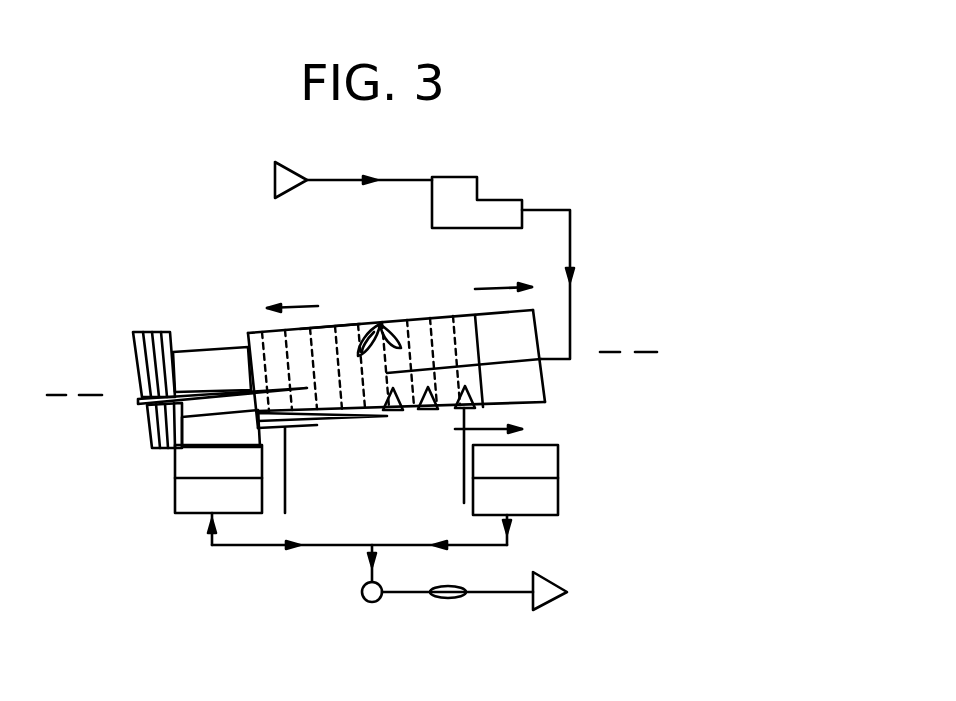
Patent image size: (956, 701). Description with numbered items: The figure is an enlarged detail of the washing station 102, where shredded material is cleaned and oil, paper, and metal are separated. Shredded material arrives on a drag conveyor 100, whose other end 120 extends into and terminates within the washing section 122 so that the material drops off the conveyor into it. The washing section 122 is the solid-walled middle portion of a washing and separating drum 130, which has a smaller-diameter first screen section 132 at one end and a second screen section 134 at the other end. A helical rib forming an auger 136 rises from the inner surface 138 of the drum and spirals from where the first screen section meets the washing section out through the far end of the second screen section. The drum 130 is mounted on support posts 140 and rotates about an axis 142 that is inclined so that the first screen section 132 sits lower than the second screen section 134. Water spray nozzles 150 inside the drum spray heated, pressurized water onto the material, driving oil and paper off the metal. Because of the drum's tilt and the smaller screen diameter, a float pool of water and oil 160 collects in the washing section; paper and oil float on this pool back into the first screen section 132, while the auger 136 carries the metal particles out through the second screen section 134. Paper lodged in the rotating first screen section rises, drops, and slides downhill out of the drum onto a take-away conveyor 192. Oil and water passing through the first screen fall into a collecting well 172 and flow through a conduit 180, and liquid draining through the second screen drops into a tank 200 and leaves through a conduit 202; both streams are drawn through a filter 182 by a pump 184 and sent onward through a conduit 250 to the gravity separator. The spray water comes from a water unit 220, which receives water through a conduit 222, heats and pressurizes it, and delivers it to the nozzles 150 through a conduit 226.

The drag conveyor 100 is at (140, 400).
The washing station 102 is at (192, 283).
The other end of drag conveyor 120 is at (327, 427).
The washing section 122 is at (381, 300).
The washing and separating drum 130 is at (252, 328).
The first screen section 132 is at (193, 350).
The second screen section 134 is at (545, 375).
The auger 136 is at (393, 322).
The inner surface 138 is at (326, 328).
The support posts 140 is at (285, 497).
The axis 142 is at (654, 354).
The water spray nozzles 150 is at (468, 410).
The float pool of water and oil 160 is at (315, 423).
The collecting tank or well 172 is at (183, 463).
The conduit 180 is at (220, 548).
The filter 182 is at (362, 598).
The pump 184 is at (452, 598).
The take-away conveyor 192 is at (133, 341).
The well or tank 200 is at (550, 463).
The conduit 202 is at (509, 545).
The water unit 220 is at (498, 187).
The conduit 222 is at (330, 180).
The conduit 226 is at (572, 230).
The conduit 250 is at (567, 592).